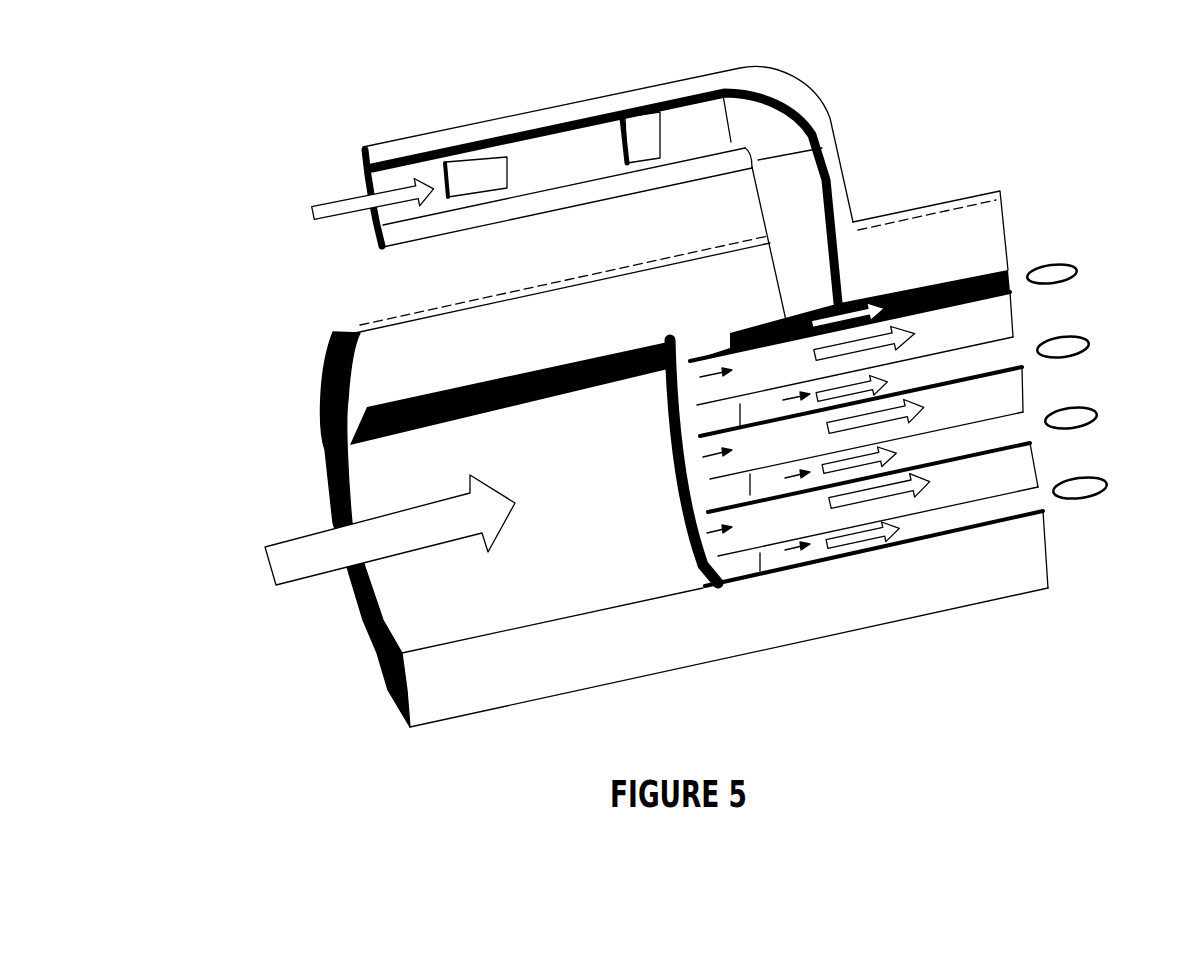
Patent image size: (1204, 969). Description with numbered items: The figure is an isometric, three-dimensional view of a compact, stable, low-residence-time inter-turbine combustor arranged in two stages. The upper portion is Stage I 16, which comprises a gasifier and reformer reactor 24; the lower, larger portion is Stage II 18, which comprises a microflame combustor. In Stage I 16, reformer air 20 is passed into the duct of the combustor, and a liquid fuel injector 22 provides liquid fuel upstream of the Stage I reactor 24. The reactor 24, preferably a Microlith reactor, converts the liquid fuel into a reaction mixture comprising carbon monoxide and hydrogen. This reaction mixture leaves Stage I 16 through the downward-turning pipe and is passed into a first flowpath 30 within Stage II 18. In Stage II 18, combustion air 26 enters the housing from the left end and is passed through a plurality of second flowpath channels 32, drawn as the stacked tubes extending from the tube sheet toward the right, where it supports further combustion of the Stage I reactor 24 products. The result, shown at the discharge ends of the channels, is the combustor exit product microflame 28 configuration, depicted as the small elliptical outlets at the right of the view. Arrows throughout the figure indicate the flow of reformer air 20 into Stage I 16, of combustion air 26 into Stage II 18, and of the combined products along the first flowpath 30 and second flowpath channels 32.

The Stage I 16 is at (163, 85).
The Stage II 18 is at (167, 725).
The reformer air 20 is at (353, 209).
The liquid fuel injector 22 is at (480, 177).
The gasifier and reformer reactor 24 is at (643, 130).
The combustion air 26 is at (373, 535).
The combustor exit product microflame 28 is at (1075, 272).
The first flowpath 30 is at (781, 320).
The second flowpath channels 32 is at (703, 360).